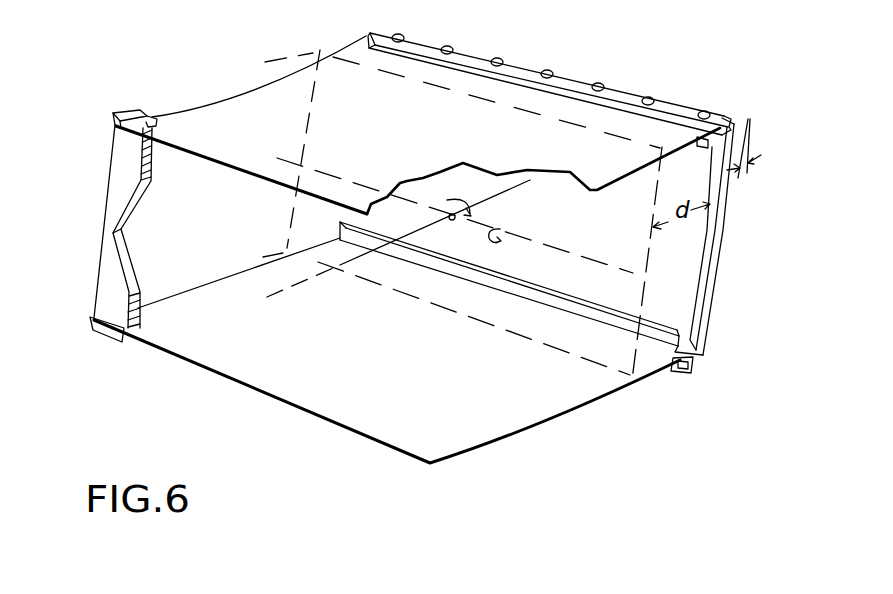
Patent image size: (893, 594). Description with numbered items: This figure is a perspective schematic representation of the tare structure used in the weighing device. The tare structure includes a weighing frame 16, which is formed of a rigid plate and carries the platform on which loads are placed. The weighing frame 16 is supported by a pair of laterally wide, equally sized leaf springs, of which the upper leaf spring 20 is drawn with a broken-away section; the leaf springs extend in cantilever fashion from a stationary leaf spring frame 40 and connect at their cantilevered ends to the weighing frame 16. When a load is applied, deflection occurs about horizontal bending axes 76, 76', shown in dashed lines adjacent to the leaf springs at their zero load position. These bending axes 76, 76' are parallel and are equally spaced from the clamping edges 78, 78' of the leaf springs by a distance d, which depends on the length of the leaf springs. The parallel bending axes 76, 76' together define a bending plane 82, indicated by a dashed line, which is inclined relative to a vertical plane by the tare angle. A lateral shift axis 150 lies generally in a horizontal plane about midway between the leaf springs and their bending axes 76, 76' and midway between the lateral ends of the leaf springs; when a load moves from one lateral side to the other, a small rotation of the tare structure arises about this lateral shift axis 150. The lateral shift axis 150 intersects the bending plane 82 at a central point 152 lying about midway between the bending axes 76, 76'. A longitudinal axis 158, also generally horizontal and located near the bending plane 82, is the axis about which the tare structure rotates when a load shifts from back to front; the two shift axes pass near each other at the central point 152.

The weighing frame 16 is at (104, 195).
The leaf spring 20 is at (613, 183).
The leaf spring frame 40 is at (716, 265).
The bending axis 76 is at (461, 161).
The clamping edge 78 is at (549, 90).
The bending plane 82 is at (643, 296).
The lateral shift axis 150 is at (427, 227).
The central point 152 is at (465, 194).
The longitudinal axis 158 is at (517, 241).
The bending axis 76' is at (474, 318).
The clamping edge 78' is at (560, 332).